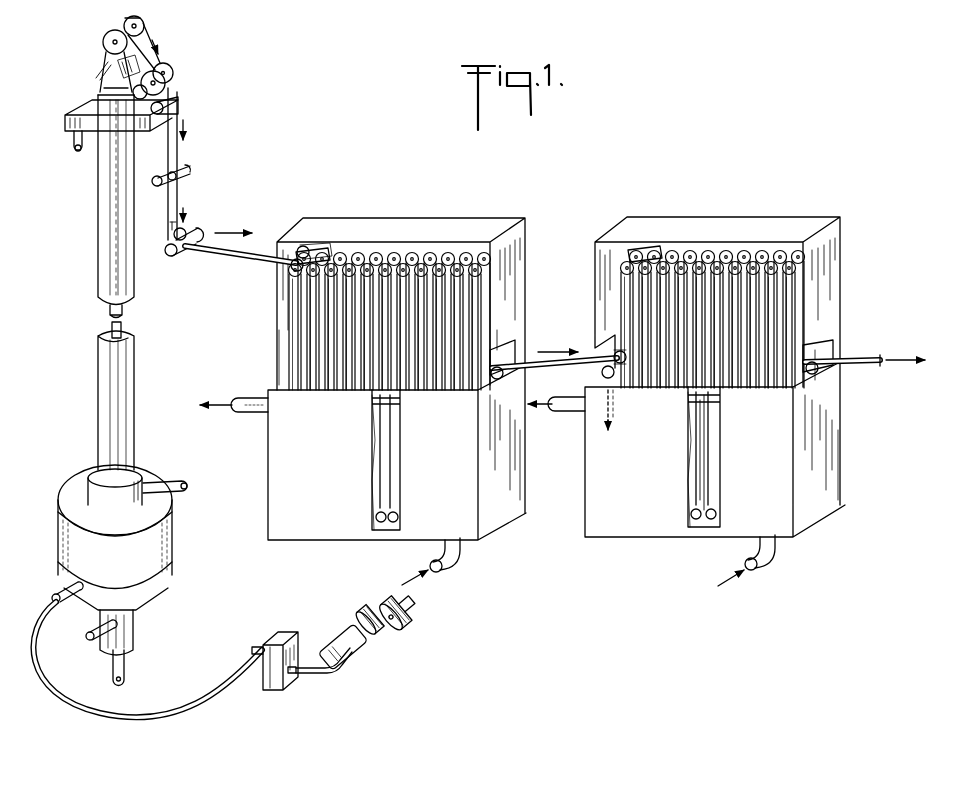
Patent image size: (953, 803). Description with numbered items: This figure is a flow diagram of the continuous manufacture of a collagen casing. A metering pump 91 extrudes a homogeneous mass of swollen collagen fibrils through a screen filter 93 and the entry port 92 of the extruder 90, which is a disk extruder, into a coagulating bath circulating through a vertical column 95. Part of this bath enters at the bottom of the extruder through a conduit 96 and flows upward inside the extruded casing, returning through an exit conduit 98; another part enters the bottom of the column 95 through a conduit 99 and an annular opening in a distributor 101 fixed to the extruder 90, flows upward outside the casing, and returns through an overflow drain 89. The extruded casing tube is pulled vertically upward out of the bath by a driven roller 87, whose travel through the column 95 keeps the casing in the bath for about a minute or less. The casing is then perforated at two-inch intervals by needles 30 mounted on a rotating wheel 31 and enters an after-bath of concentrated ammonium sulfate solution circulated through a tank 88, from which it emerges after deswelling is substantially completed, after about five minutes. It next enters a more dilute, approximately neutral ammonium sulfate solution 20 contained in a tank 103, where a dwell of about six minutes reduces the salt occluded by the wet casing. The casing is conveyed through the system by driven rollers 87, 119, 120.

The driven roller 87 is at (104, 43).
The needles 30 is at (163, 62).
The rotating wheel 31 is at (172, 70).
The overflow drain 89 is at (72, 146).
The vertical column 95 is at (97, 388).
The distributor 101 is at (86, 484).
The conduit 99 is at (168, 480).
The extruder 90 is at (60, 540).
The entry port 92 is at (48, 590).
The conduit 96 is at (96, 626).
The exit conduit 98 is at (112, 668).
The screen filter 93 is at (262, 680).
The metering pump 91 is at (355, 645).
The tank 88 is at (268, 458).
The driven roller 119 is at (304, 250).
The driven roller 120 is at (642, 250).
The tank 103 is at (588, 535).
The ammonium sulfate solution 20 is at (698, 472).